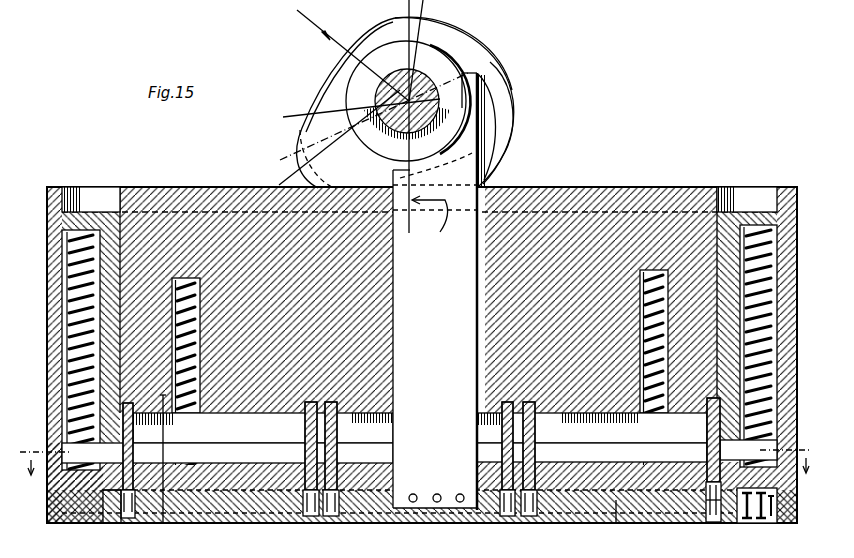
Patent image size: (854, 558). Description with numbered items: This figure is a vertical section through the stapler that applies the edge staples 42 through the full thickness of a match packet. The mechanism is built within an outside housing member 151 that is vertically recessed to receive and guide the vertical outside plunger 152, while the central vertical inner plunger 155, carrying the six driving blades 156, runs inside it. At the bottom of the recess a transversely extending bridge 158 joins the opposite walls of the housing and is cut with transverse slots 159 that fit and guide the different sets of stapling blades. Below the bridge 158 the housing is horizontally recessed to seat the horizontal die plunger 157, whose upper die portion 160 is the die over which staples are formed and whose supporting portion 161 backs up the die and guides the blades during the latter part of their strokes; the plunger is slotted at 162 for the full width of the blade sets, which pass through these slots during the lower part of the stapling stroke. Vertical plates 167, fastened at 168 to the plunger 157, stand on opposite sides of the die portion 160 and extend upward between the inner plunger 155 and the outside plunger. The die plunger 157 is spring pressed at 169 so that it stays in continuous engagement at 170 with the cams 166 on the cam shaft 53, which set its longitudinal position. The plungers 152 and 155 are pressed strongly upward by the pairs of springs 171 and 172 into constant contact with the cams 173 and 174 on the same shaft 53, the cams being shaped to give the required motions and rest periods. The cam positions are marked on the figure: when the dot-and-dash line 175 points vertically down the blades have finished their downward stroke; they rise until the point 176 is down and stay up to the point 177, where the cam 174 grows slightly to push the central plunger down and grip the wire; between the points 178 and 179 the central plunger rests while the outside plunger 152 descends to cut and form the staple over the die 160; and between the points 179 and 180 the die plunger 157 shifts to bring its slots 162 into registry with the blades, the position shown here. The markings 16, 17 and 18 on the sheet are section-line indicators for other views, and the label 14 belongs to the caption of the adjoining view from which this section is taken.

The valve body 14 is at (282, 524).
The pressure chamber 16 is at (418, 454).
The valve stem 17 is at (162, 538).
The valve stem 18 is at (128, 402).
The edge staples 42 is at (112, 524).
The cam shaft 53 is at (352, 101).
The outside housing member 151 is at (58, 196).
The vertical outside plunger 152 is at (98, 212).
The vertical inner plunger 155 is at (640, 188).
The staple driving blades 156 is at (338, 453).
The horizontal die plunger 157 is at (398, 524).
The bridge 158 is at (312, 468).
The transverse slots 159 is at (704, 468).
The die portion 160 is at (618, 524).
The supporting portion 161 is at (712, 524).
The plunger slots 162 is at (330, 516).
The die plunger cams 166 is at (463, 67).
The vertical plates 167 is at (435, 291).
The plate fastening 168 is at (460, 503).
The die plunger spring 169 is at (757, 524).
The cam engagement point 170 is at (456, 101).
The outside plunger springs 171 is at (66, 358).
The inner plunger springs 172 is at (186, 440).
The outside plunger cam 173 is at (494, 150).
The inner plunger cam 174 is at (500, 112).
The dot-and-dash cam line 175 is at (298, 180).
The cam point 176 is at (306, 32).
The cam point 177 is at (400, 15).
The cam point 178 is at (424, 15).
The cam point 179 is at (477, 73).
The cam point 180 is at (439, 221).